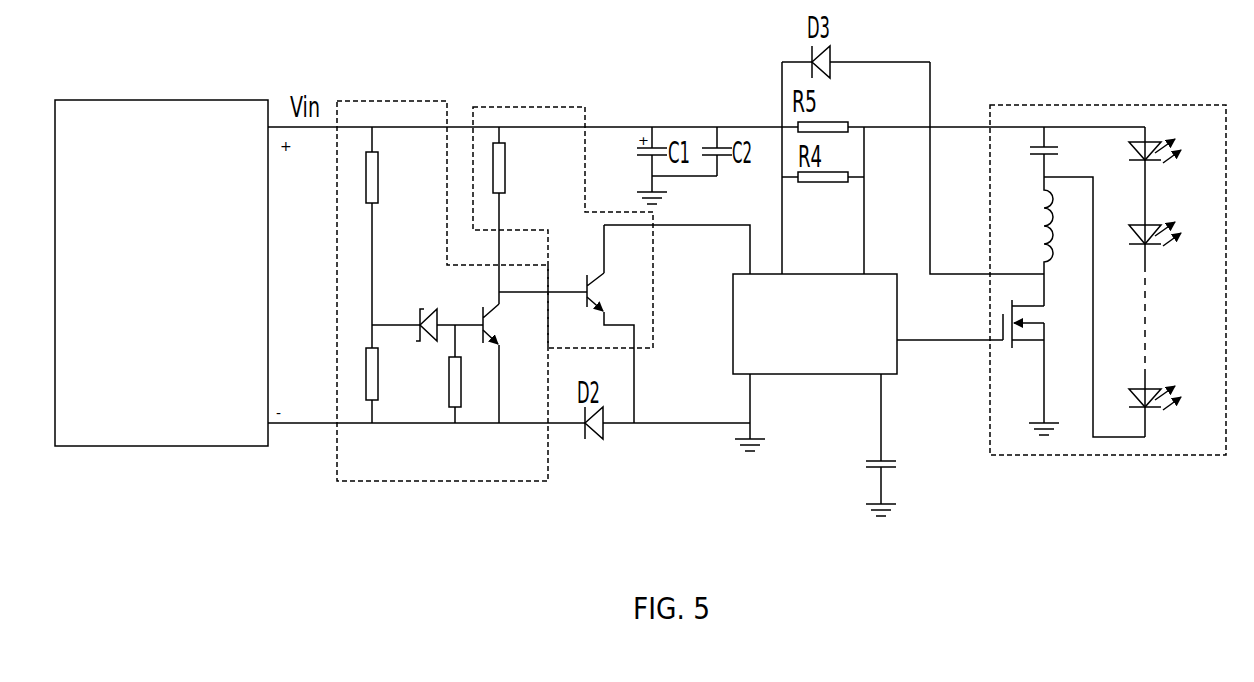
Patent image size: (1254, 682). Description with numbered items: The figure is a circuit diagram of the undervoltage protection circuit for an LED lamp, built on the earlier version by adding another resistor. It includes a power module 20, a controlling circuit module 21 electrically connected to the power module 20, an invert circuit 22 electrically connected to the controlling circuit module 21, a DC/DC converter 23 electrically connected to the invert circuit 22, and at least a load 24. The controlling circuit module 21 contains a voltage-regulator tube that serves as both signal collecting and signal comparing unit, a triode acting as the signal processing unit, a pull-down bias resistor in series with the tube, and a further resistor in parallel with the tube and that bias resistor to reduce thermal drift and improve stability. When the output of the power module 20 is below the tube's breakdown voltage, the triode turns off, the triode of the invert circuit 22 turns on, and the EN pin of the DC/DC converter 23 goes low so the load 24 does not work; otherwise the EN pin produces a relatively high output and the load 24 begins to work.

The power module 20 is at (170, 100).
The controlling circuit module 21 is at (358, 101).
The invert circuit 22 is at (500, 107).
The DC/DC converter 23 is at (815, 374).
The load 24 is at (1178, 455).